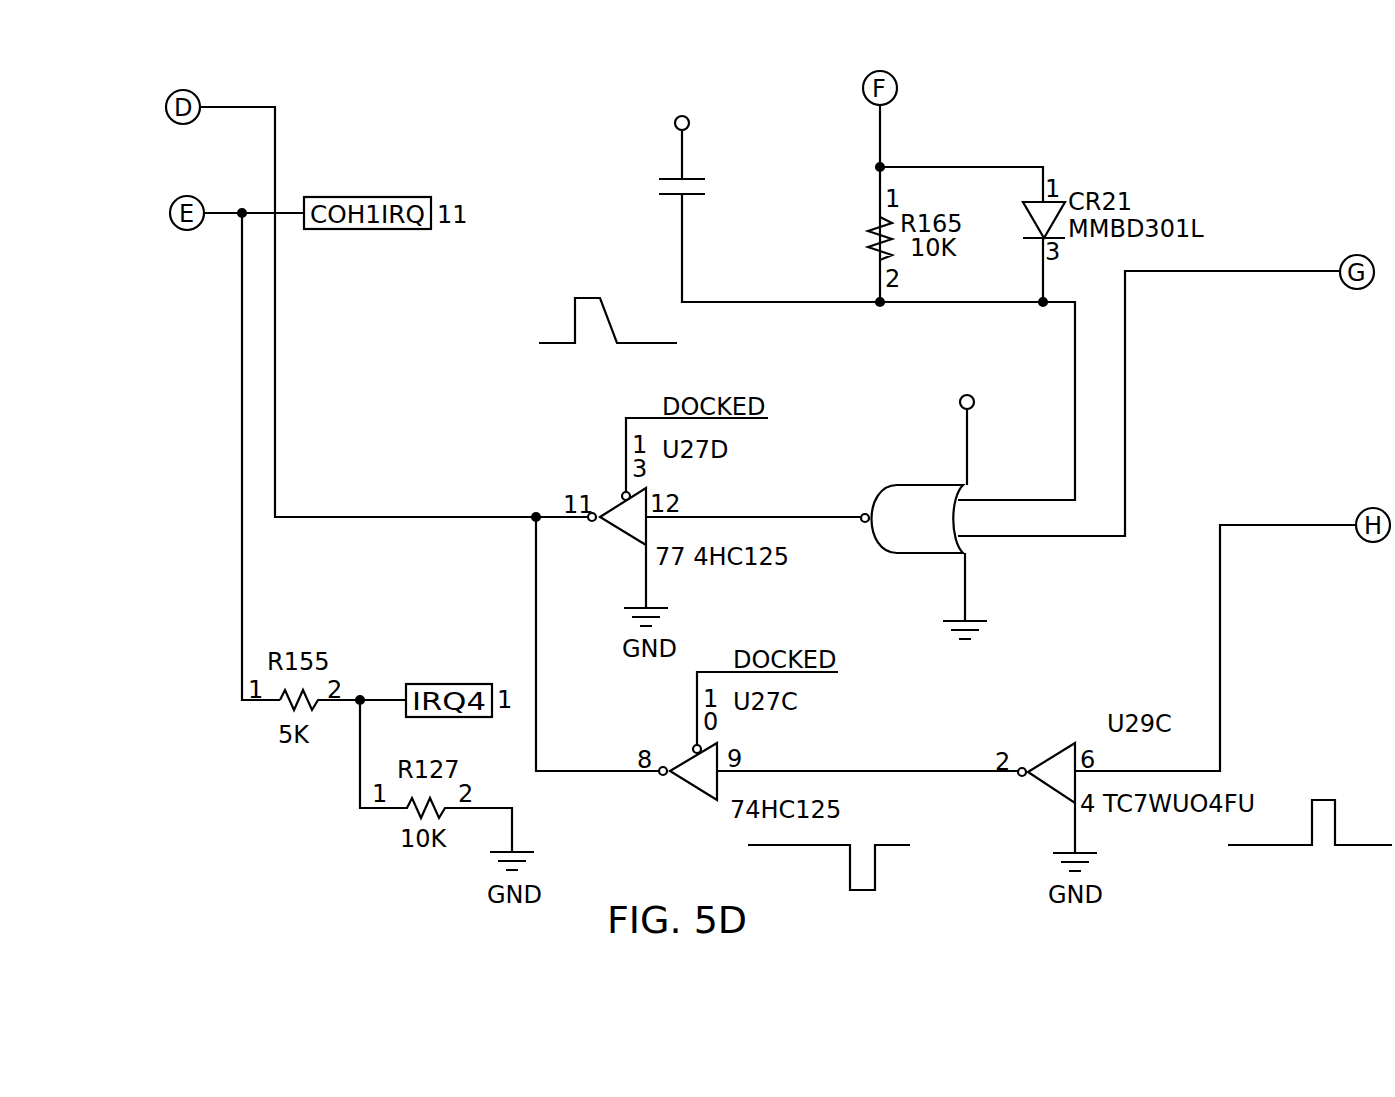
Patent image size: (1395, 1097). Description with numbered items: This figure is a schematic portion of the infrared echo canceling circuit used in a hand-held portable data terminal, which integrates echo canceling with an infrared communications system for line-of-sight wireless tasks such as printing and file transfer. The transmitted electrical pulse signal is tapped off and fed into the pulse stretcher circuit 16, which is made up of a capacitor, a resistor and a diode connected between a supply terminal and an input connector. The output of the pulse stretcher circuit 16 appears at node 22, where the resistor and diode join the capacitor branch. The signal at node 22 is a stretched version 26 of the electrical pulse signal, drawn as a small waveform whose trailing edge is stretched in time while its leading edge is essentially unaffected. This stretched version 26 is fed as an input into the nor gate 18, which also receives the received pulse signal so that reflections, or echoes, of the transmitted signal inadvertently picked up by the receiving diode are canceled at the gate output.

The pulse stretcher circuit 16 is at (662, 170).
The nor gate 18 is at (930, 483).
The node 22 is at (955, 303).
The stretched version of the electrical pulse signal 26 is at (577, 290).